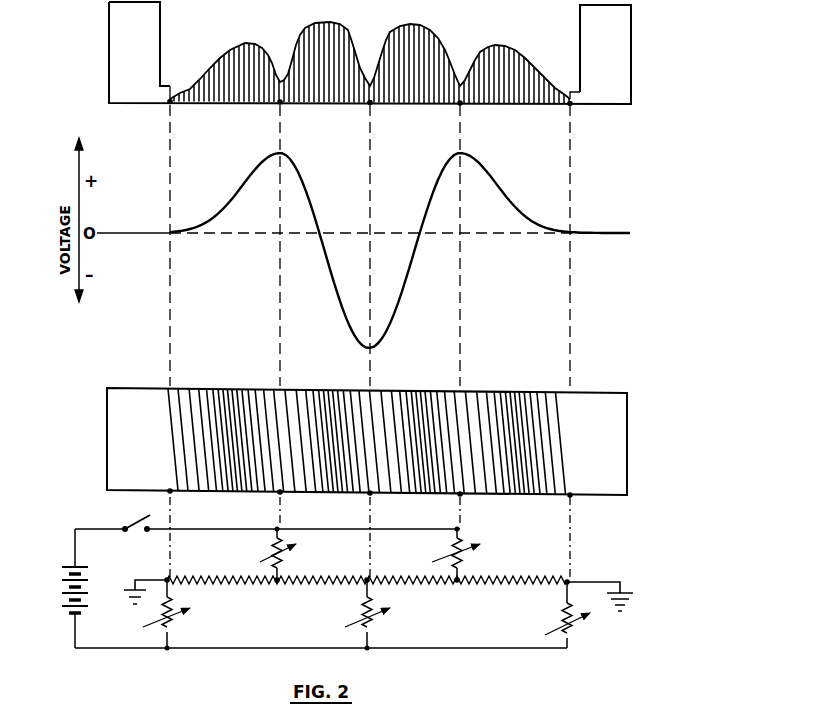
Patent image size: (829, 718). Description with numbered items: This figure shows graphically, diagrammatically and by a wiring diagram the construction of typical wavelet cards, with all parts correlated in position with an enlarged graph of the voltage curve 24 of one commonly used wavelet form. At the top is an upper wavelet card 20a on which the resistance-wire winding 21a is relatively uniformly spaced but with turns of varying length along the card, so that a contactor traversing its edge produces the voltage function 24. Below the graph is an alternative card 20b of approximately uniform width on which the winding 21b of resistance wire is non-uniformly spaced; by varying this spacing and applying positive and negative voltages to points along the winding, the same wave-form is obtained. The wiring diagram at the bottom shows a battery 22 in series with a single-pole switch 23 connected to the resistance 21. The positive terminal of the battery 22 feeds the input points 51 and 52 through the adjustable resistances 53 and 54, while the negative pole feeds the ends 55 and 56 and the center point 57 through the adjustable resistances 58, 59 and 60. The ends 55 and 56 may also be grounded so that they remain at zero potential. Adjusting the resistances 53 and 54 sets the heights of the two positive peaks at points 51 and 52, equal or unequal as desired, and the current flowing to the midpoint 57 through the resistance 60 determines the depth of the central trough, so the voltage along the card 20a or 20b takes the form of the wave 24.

The upper wavelet card 20a is at (633, 80).
The resistance-wire winding 21a is at (530, 92).
The voltage curve 24 is at (307, 176).
The wavelet card of uniform width 20b is at (620, 428).
The resistance-wire winding 21b is at (532, 410).
The single-pole switch 23 is at (146, 518).
The battery 22 is at (65, 587).
The electrical resistance winding 21 is at (238, 575).
The end point of resistance 55 is at (167, 580).
The positive input point 52 is at (277, 585).
The center point of resistance 57 is at (368, 578).
The positive input point 51 is at (460, 585).
The end point of resistance 56 is at (571, 580).
The adjustable resistance 58 is at (170, 620).
The adjustable resistance 54 is at (285, 560).
The adjustable resistance 60 is at (372, 618).
The adjustable resistance 53 is at (462, 553).
The adjustable resistance 59 is at (572, 625).